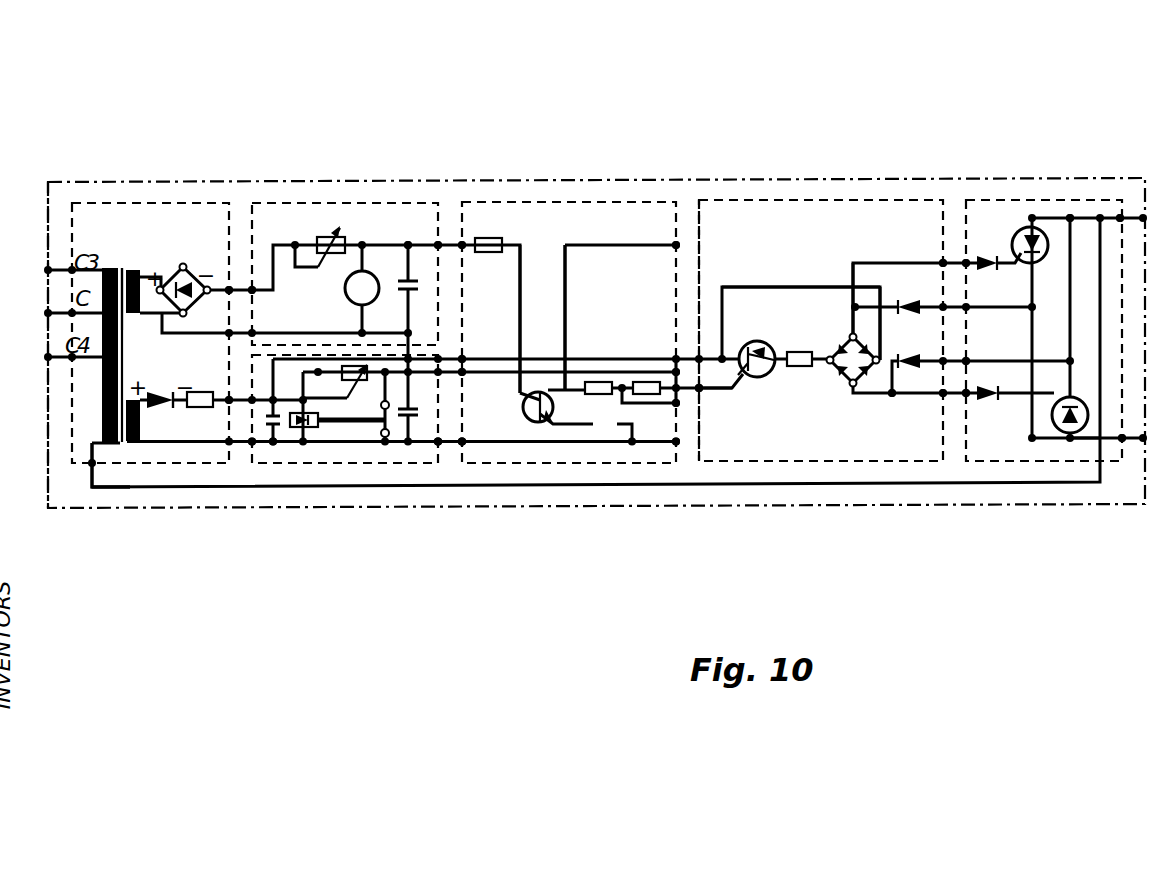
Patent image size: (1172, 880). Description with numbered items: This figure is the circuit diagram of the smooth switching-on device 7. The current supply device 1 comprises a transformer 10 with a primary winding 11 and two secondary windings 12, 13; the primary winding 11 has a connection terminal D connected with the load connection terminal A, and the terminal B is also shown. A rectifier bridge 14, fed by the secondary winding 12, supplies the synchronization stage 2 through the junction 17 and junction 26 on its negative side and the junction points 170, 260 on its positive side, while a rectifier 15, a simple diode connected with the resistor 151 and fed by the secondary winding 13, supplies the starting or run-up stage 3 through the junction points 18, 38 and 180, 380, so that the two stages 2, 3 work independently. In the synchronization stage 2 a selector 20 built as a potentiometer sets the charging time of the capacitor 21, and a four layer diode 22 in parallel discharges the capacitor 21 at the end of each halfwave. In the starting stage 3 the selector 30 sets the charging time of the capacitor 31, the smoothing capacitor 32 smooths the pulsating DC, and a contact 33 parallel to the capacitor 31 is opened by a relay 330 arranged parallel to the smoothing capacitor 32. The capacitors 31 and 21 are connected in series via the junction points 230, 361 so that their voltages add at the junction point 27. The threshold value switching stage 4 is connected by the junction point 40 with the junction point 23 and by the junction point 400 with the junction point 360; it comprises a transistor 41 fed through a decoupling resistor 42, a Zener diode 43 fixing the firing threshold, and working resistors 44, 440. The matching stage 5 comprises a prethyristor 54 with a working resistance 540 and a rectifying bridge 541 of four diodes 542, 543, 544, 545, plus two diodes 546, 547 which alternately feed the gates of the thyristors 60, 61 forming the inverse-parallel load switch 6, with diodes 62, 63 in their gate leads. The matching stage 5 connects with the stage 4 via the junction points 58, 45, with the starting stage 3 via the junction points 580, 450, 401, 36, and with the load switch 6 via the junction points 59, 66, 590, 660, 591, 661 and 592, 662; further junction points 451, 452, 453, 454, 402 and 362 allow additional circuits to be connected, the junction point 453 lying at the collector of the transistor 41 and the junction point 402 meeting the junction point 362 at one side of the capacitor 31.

The current supply device 1 is at (153, 460).
The synchronization stage 2 is at (363, 223).
The starting or run-up stage 3 is at (362, 437).
The limiting or threshold value switching stage 4 is at (533, 233).
The matching stage 5 is at (762, 225).
The load switch 6 is at (1063, 203).
The smooth switching-on device 7 is at (85, 504).
The transformer 10 is at (122, 262).
The primary winding 11 is at (104, 489).
The secondary winding 12 is at (130, 266).
The secondary winding 13 is at (128, 443).
The rectifier bridge 14 is at (178, 266).
The rectifier 15 is at (200, 410).
The resistor 151 is at (208, 410).
The junction 17 is at (198, 272).
The junction point 170 is at (213, 284).
The junction point 18 is at (232, 410).
The junction point 180 is at (244, 410).
The selector 20 is at (324, 238).
The capacitor 21 is at (399, 276).
The four layer diode 22 is at (358, 268).
The junction point 23 is at (462, 243).
The junction point 230 is at (403, 280).
The junction 26 is at (229, 287).
The junction point 260 is at (254, 287).
The junction point 27 is at (438, 243).
The selector 30 is at (345, 400).
The capacitor 31 is at (417, 416).
The smoothing capacitor 32 is at (279, 428).
The contact 33 is at (385, 438).
The relay 330 is at (300, 428).
The junction point 36 is at (436, 444).
The junction point 360 is at (438, 444).
The junction point 361 is at (399, 432).
The junction point 362 is at (462, 444).
The junction point 38 is at (273, 444).
The junction point 380 is at (252, 444).
The junction point 40 is at (492, 237).
The junction point 400 is at (463, 444).
The junction point 401 is at (463, 375).
The junction point 402 is at (463, 362).
The transistor 41 is at (558, 425).
The decoupling resistor 42 is at (518, 300).
The Zener diode 43 is at (598, 396).
The working resistor 44 is at (646, 396).
The working resistor 440 is at (676, 405).
The junction point 45 is at (699, 356).
The junction point 450 is at (676, 372).
The junction point 451 is at (676, 360).
The junction point 452 is at (677, 444).
The junction point 453 is at (676, 243).
The junction point 454 is at (699, 391).
The prethyristor 54 is at (765, 342).
The working resistance 540 is at (800, 351).
The rectifying bridge 541 is at (852, 386).
The diode 542 is at (812, 368).
The diode 543 is at (862, 306).
The diode 544 is at (851, 335).
The diode 545 is at (864, 396).
The diode 546 is at (909, 305).
The diode 547 is at (908, 366).
The junction point 58 is at (733, 390).
The junction point 580 is at (700, 385).
The junction point 59 is at (943, 261).
The junction point 590 is at (951, 262).
The junction point 591 is at (958, 396).
The junction point 592 is at (942, 396).
The thyristor 60 is at (1033, 222).
The thyristor 61 is at (1085, 441).
The diode 62 is at (990, 261).
The diode 63 is at (997, 398).
The junction point 66 is at (968, 260).
The junction point 660 is at (968, 311).
The junction point 661 is at (1003, 440).
The junction point 662 is at (980, 398).
The load connection terminal A is at (1122, 216).
The output terminal B is at (1123, 441).
The connection terminal D is at (90, 466).